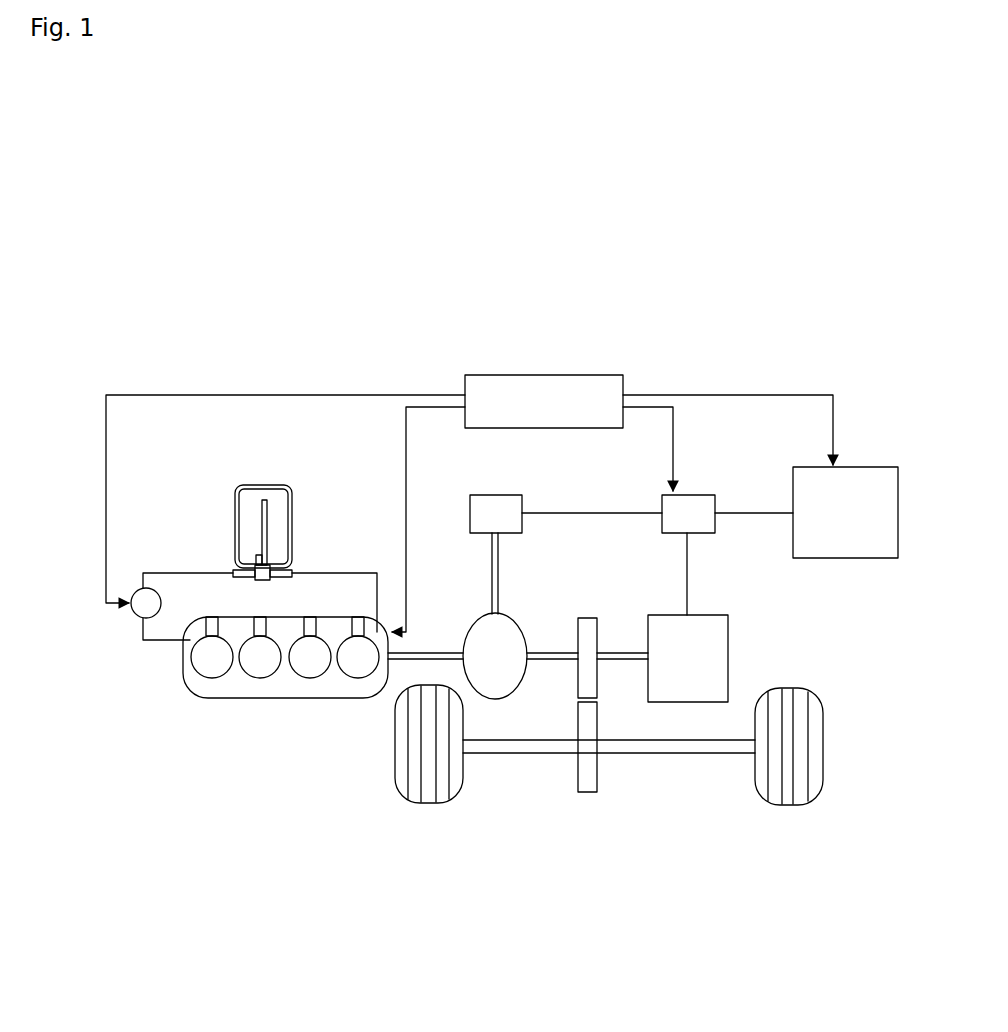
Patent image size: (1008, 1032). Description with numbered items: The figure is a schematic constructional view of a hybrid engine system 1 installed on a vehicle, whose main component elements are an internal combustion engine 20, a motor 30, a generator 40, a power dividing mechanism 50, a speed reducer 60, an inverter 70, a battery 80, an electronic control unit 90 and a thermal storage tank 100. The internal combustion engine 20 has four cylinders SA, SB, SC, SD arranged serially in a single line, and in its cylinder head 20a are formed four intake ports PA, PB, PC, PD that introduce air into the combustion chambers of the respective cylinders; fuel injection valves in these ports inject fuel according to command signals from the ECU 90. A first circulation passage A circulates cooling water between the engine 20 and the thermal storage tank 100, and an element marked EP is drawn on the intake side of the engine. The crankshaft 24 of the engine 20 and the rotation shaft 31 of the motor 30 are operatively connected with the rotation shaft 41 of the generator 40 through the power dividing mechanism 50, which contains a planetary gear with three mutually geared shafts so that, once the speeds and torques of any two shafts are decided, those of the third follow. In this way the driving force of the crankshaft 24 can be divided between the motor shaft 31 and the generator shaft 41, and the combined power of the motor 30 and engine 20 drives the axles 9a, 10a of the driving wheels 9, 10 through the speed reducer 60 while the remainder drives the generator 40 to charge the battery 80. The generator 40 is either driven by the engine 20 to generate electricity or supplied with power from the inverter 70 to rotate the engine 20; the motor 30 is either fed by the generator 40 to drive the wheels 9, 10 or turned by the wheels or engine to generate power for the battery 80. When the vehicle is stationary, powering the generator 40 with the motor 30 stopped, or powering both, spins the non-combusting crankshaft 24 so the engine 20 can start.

The hybrid engine system 1 is at (220, 366).
The thermal storage tank 100 is at (263, 485).
The first circulation passage A is at (175, 569).
The exhaust pipe / exhaust purifier EP is at (146, 603).
The intake port PD is at (212, 618).
The intake port PC is at (262, 618).
The intake port PB is at (312, 618).
The intake port PA is at (360, 618).
The cylinder SD is at (201, 667).
The cylinder SC is at (249, 667).
The cylinder SB is at (299, 667).
The cylinder SA is at (347, 667).
The internal combustion engine 20 is at (219, 710).
The cylinder head 20a is at (244, 749).
The crankshaft 24 is at (429, 652).
The power dividing mechanism 50 is at (512, 613).
The rotation shaft of the generator 41 is at (500, 566).
The generator 40 is at (492, 494).
The inverter 70 is at (695, 493).
The battery 80 is at (858, 466).
The electronic control unit (ECU) 90 is at (624, 381).
The motor 30 is at (728, 633).
The rotation shaft of the motor 31 is at (612, 651).
The speed reducer 60 is at (578, 677).
The driving wheel 9 is at (423, 803).
The axle 9a is at (550, 755).
The driving wheel 10 is at (800, 688).
The axle 10a is at (695, 754).